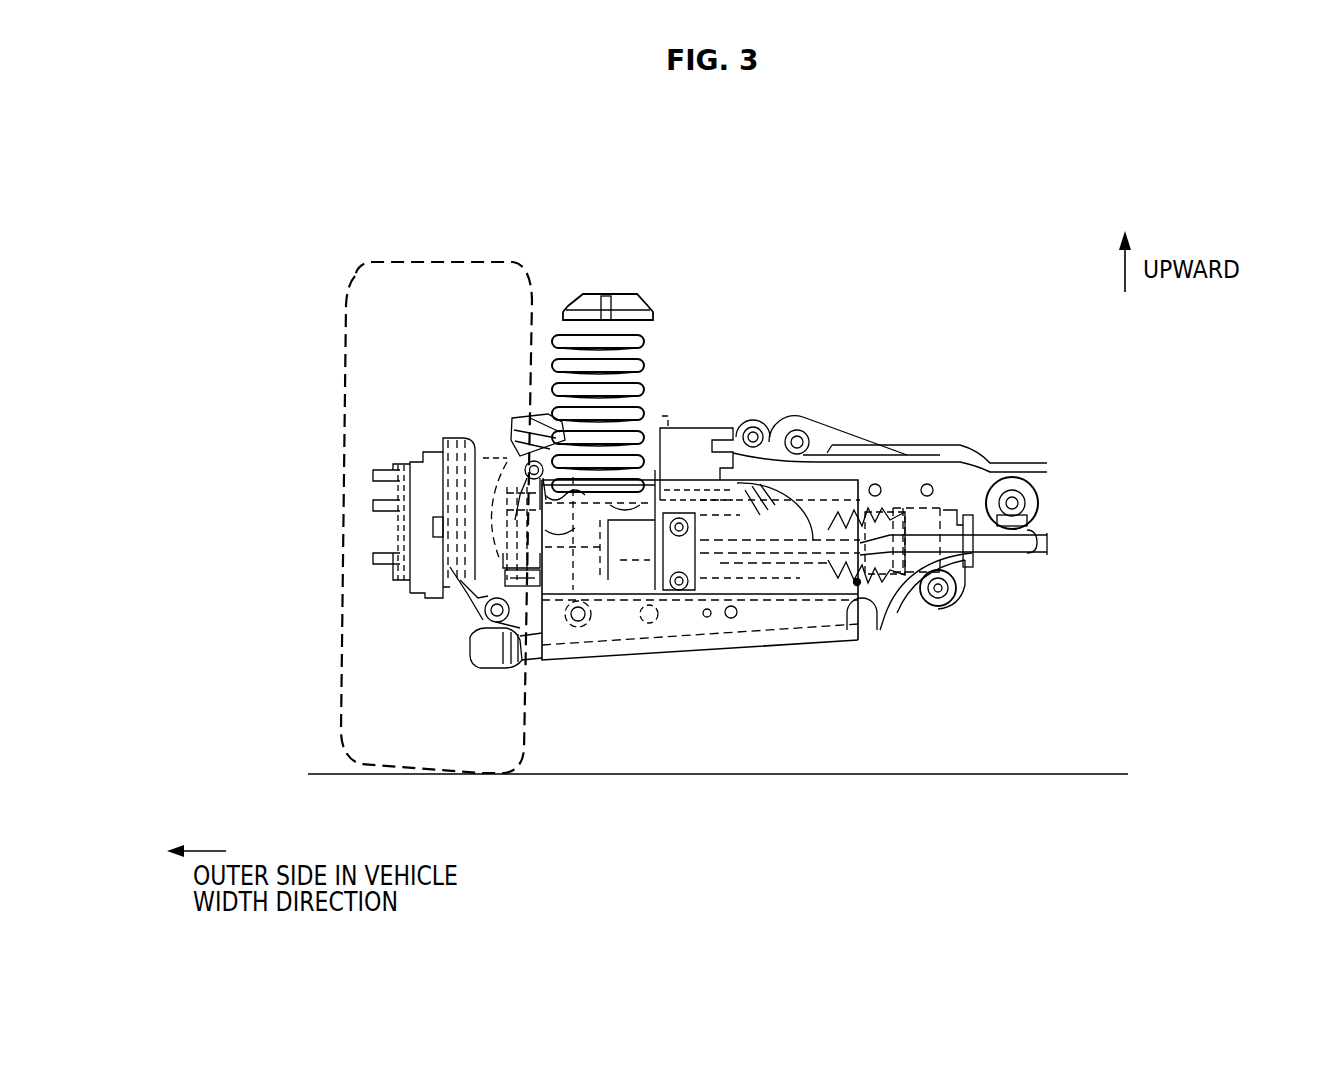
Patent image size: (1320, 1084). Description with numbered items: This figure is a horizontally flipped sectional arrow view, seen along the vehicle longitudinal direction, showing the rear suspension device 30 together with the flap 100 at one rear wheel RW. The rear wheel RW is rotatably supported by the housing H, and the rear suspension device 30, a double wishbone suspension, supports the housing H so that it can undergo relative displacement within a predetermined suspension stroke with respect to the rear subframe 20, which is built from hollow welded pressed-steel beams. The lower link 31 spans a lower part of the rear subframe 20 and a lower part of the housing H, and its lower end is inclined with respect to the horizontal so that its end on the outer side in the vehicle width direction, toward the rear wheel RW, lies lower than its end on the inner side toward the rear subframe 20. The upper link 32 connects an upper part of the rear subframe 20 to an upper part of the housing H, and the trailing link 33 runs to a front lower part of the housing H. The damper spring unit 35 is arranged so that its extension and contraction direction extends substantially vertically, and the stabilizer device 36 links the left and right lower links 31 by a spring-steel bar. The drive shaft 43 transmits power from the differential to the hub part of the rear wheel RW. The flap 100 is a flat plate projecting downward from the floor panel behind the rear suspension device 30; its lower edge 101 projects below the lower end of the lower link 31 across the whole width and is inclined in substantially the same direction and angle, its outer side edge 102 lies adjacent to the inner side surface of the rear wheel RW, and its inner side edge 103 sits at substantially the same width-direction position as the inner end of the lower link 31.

The rear wheel RW is at (355, 276).
The housing H is at (483, 458).
The upper link 32 is at (538, 426).
The damper spring unit 35 is at (627, 300).
The rear suspension device 30 is at (735, 370).
The flap 100 is at (803, 480).
The rear subframe 20 is at (942, 468).
The side edge 102 is at (540, 558).
The trailing link 33 is at (478, 647).
The side edge 103 is at (957, 597).
The lower edge 101 is at (672, 651).
The lower link 31 is at (718, 632).
The drive shaft 43 is at (779, 548).
The stabilizer device 36 is at (809, 563).